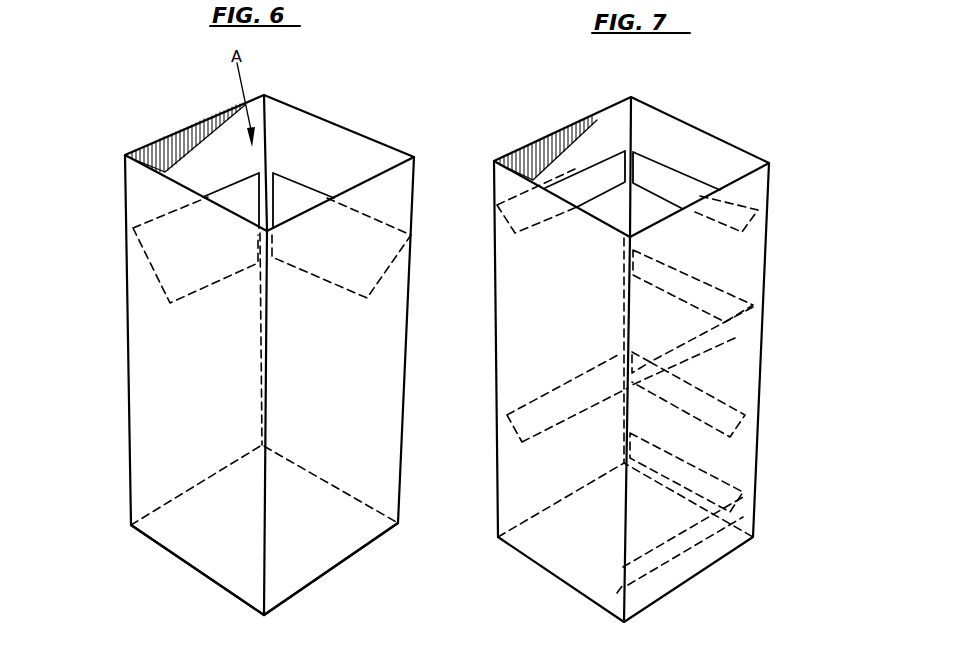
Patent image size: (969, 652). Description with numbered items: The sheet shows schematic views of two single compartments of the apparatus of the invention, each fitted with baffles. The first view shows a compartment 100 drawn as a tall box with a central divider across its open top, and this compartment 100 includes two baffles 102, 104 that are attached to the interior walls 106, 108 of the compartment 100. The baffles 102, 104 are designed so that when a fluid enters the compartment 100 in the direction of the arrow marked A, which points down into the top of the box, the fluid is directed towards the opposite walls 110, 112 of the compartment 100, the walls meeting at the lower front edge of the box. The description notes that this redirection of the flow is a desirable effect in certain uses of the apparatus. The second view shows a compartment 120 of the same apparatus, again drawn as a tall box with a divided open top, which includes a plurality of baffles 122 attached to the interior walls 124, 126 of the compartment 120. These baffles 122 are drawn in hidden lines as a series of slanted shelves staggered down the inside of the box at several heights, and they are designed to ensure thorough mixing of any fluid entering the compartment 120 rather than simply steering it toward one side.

In FIG. 6, the compartment 100 is at (143, 398).
In FIG. 6, the baffle 102 is at (228, 197).
In FIG. 6, the baffle 104 is at (288, 202).
In FIG. 6, the interior wall 106 is at (247, 176).
In FIG. 6, the interior wall 108 is at (359, 174).
In FIG. 6, the opposite wall 110 is at (212, 585).
In FIG. 6, the opposite wall 112 is at (325, 577).
In FIG. 7, the compartment 120 is at (752, 257).
In FIG. 7, the baffles 122 is at (578, 185).
In FIG. 7, the interior wall 124 is at (622, 148).
In FIG. 7, the interior wall 126 is at (683, 148).